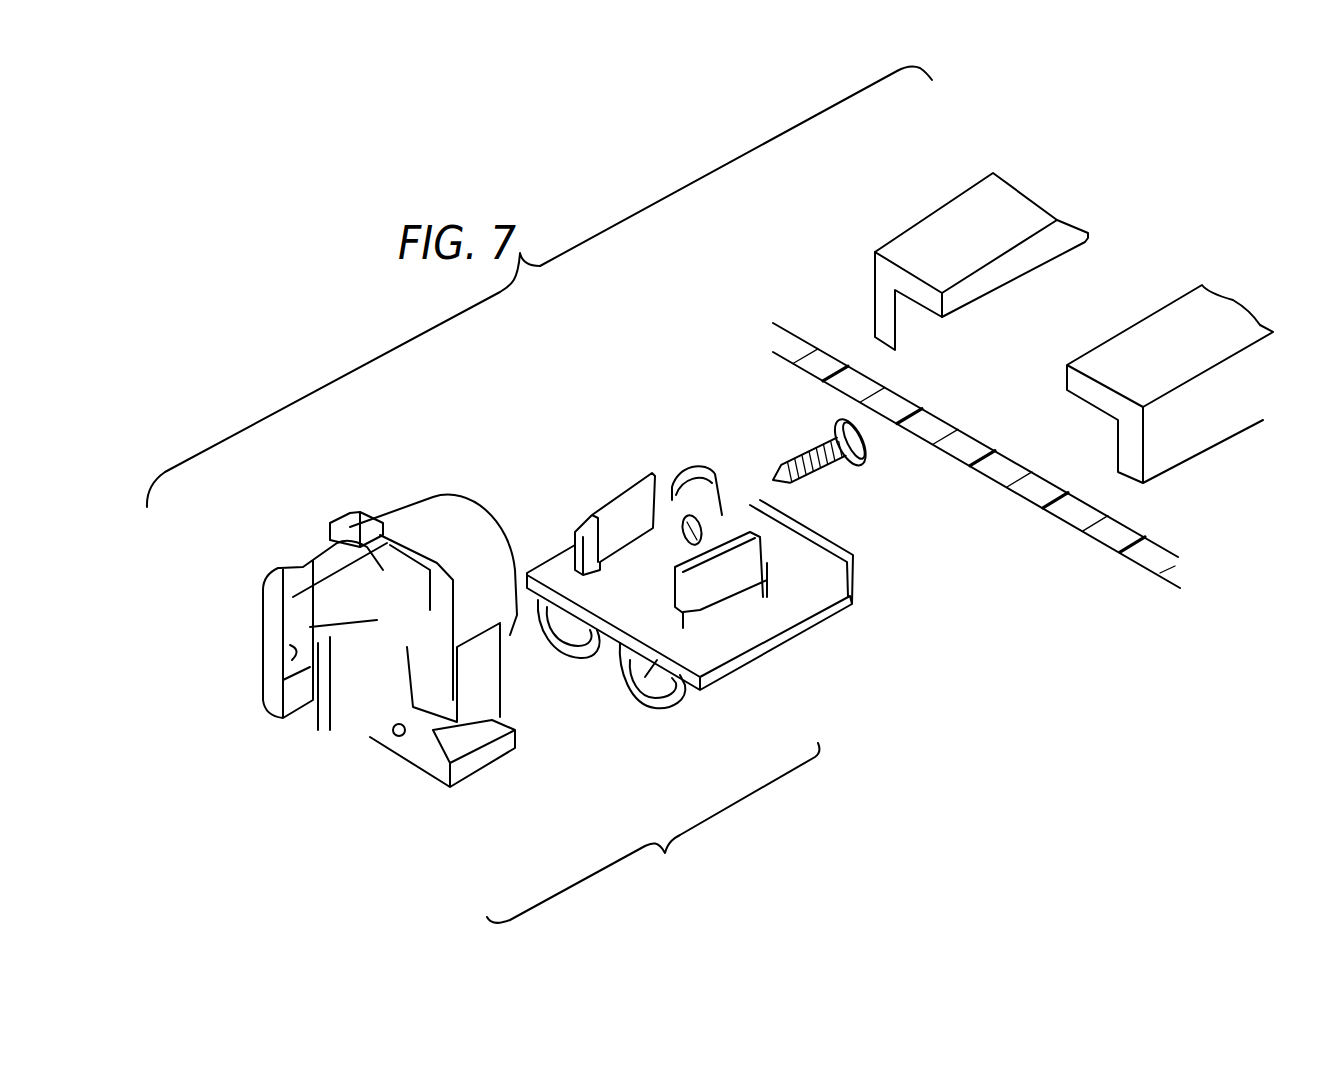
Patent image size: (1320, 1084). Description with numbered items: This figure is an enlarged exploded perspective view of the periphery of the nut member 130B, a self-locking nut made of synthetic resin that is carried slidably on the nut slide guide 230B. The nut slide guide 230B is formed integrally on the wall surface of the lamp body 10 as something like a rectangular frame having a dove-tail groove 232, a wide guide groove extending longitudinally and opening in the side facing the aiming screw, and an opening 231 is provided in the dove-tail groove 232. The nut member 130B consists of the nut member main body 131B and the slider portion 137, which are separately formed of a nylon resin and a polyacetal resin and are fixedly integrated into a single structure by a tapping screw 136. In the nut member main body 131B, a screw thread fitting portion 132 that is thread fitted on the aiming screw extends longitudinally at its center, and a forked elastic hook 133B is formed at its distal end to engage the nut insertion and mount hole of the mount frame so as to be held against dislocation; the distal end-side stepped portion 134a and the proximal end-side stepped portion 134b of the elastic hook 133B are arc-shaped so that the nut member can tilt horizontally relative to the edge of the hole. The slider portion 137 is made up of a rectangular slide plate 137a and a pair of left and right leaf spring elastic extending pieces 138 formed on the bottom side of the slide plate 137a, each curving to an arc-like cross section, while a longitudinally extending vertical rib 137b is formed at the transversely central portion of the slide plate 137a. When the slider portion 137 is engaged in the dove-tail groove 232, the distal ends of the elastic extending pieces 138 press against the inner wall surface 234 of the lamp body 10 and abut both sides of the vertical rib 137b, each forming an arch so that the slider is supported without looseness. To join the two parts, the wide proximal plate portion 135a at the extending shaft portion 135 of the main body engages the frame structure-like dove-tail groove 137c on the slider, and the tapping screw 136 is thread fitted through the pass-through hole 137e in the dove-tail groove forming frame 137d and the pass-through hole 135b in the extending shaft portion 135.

The lamp body 10 is at (973, 463).
The nut member 130B is at (566, 652).
The nut member main body 131B is at (382, 661).
The screw thread fitting portion 132 is at (292, 650).
The elastic hook 133B is at (292, 570).
The distal end-side stepped portion 134a is at (420, 612).
The proximal end-side stepped portion 134b is at (438, 620).
The extending shaft portion 135 is at (483, 692).
The wide proximal plate portion 135a is at (495, 752).
The pass-through hole 135b is at (403, 722).
The tapping screw 136 is at (803, 443).
The slider portion 137 is at (733, 587).
The slide plate 137a is at (787, 638).
The vertical rib 137b is at (615, 663).
The dove-tail groove 137c is at (614, 545).
The dove-tail groove forming frame 137d is at (846, 598).
The pass-through hole 137e is at (687, 515).
The elastic extending piece 138 is at (552, 647).
The nut slide guide 230B is at (872, 272).
The opening 231 is at (1172, 303).
The dove-tail groove 232 is at (896, 313).
The inner wall surface 234 is at (1043, 347).